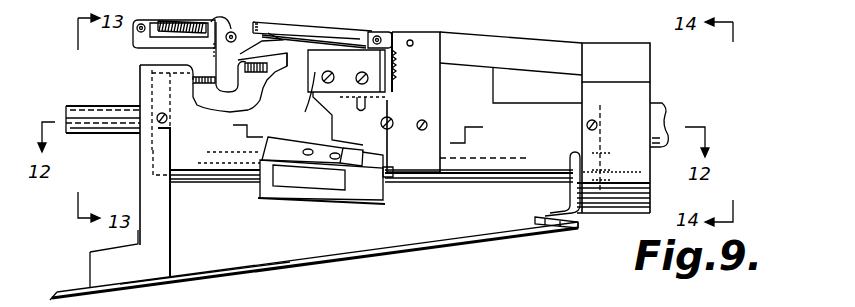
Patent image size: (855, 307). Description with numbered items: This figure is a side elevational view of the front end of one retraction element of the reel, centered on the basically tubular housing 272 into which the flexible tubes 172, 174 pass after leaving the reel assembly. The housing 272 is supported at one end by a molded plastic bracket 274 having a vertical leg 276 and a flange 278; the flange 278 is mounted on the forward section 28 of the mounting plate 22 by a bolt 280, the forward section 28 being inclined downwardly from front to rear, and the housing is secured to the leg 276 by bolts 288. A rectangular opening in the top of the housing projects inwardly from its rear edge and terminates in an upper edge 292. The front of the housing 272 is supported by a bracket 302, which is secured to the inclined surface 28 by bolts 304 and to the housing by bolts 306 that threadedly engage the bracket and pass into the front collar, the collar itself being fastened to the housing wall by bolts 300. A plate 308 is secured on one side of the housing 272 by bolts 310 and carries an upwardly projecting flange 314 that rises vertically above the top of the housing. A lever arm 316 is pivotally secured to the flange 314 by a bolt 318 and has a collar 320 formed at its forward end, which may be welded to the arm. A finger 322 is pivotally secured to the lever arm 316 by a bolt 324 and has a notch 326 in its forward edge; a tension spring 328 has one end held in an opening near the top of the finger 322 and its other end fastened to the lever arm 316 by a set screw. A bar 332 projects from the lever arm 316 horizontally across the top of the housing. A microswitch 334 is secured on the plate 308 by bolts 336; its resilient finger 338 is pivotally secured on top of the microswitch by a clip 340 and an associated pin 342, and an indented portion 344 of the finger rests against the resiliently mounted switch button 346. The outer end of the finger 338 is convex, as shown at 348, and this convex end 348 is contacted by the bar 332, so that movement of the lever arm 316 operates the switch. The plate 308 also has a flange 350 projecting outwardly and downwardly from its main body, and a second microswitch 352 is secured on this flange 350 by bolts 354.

The plate 22 is at (267, 272).
The forward section 28 is at (291, 268).
The flexible tube 172 is at (95, 111).
The flexible tube 174 is at (99, 129).
The housing 272 is at (484, 185).
The bracket 274 is at (171, 247).
The vertical leg 276 is at (173, 209).
The flange 278 is at (90, 263).
The bolt 280 is at (112, 246).
The bolt 288 is at (167, 121).
The upper edge 292 is at (248, 58).
The bolt 300 is at (596, 121).
The bracket 302 is at (570, 197).
The bolt 304 is at (541, 210).
The bolt 306 is at (571, 160).
The plate 308 is at (436, 106).
The bolt 310 is at (392, 127).
The upwardly projecting flange 314 is at (456, 33).
The lever arm 316 is at (521, 45).
The bolt 318 is at (441, 50).
The collar 320 is at (650, 70).
The finger 322 is at (216, 60).
The bolt 324 is at (220, 28).
The notch 326 is at (240, 83).
The tension spring 328 is at (177, 17).
The bar 332 is at (282, 24).
The microswitch 334 is at (294, 95).
The bolt 336 is at (349, 118).
The resilient finger 338 is at (340, 108).
The clip 340 is at (398, 73).
The pin 342 is at (395, 37).
The indented portion 344 is at (366, 33).
The switch button 346 is at (348, 110).
The convex end 348 is at (287, 70).
The flange 350 is at (372, 192).
The second microswitch 352 is at (308, 180).
The bolt 354 is at (334, 160).